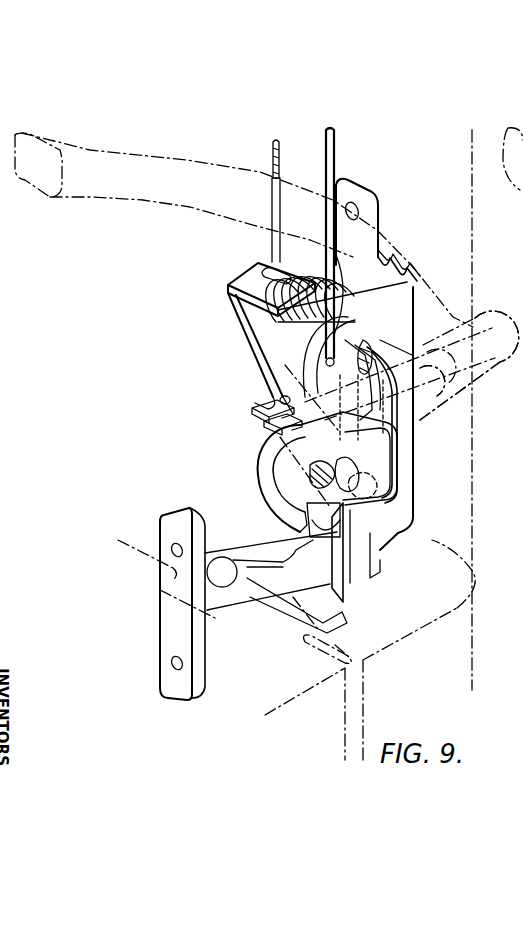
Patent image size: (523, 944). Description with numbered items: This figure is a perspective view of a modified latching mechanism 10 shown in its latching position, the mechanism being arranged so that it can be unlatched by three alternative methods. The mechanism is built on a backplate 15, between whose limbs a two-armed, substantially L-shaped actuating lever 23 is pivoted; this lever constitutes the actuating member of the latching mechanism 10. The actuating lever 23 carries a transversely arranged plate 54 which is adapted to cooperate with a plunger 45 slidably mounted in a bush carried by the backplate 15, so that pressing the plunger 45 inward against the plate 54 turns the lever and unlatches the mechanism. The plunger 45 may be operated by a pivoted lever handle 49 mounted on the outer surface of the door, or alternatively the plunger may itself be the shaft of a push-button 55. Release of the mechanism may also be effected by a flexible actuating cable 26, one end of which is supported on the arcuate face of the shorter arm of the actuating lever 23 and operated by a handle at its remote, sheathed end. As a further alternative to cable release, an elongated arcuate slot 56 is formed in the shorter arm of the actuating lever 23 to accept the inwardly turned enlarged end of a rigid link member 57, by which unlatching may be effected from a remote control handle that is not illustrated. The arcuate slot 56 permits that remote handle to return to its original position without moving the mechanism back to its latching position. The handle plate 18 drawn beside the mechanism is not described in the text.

The latching mechanism 10 is at (244, 473).
The backplate 15 is at (407, 293).
The handle plate 18 is at (270, 560).
The actuating lever 23 is at (290, 378).
The flexible actuating cable 26 is at (273, 347).
The plunger 45 is at (420, 420).
The lever handle 49 is at (235, 188).
The transversely arranged plate 54 is at (410, 436).
The push-button 55 is at (452, 338).
The elongated arcuate slot 56 is at (280, 399).
The rigid link member 57 is at (335, 166).